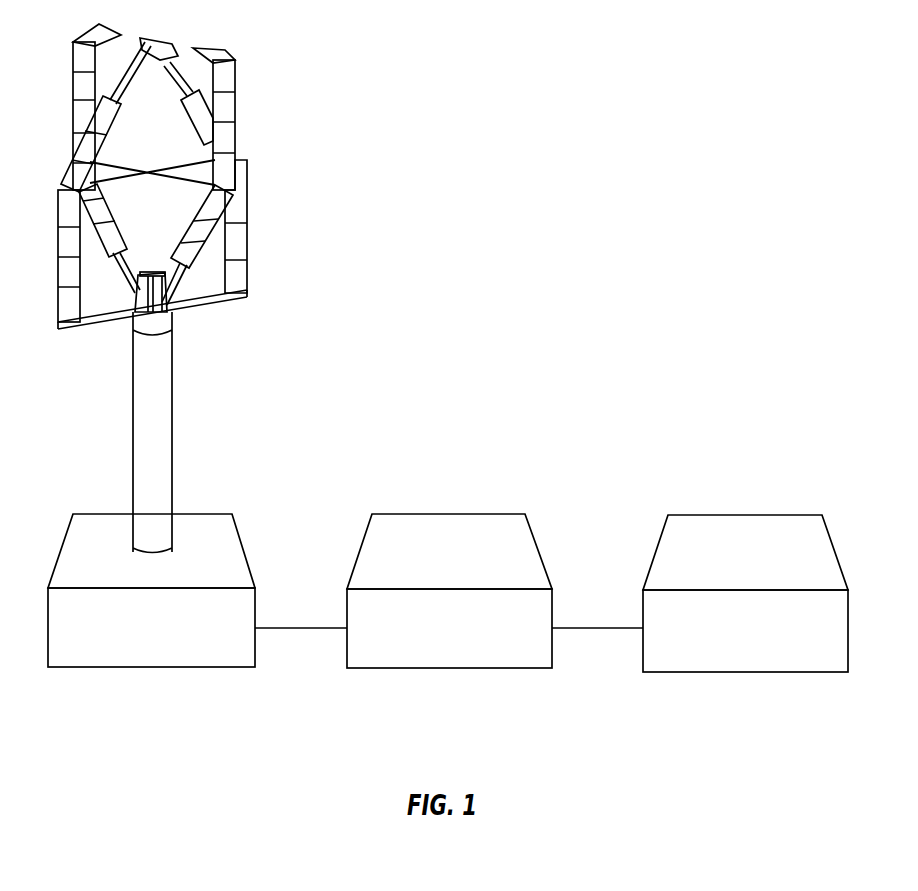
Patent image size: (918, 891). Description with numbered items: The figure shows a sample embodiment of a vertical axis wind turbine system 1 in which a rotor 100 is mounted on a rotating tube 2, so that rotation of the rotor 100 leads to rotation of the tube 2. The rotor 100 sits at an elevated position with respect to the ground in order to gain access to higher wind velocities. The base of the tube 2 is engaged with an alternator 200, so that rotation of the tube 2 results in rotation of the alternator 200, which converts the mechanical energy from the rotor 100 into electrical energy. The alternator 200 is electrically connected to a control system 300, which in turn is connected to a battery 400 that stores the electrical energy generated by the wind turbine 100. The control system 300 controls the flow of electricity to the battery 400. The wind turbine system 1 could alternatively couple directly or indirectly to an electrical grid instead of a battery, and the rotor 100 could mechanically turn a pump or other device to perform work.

The vertical axis wind turbine system 1 is at (90, 429).
The rotating tube 2 is at (174, 430).
The rotor 100 is at (265, 48).
The alternator 200 is at (196, 514).
The control system 300 is at (502, 514).
The battery 400 is at (797, 515).